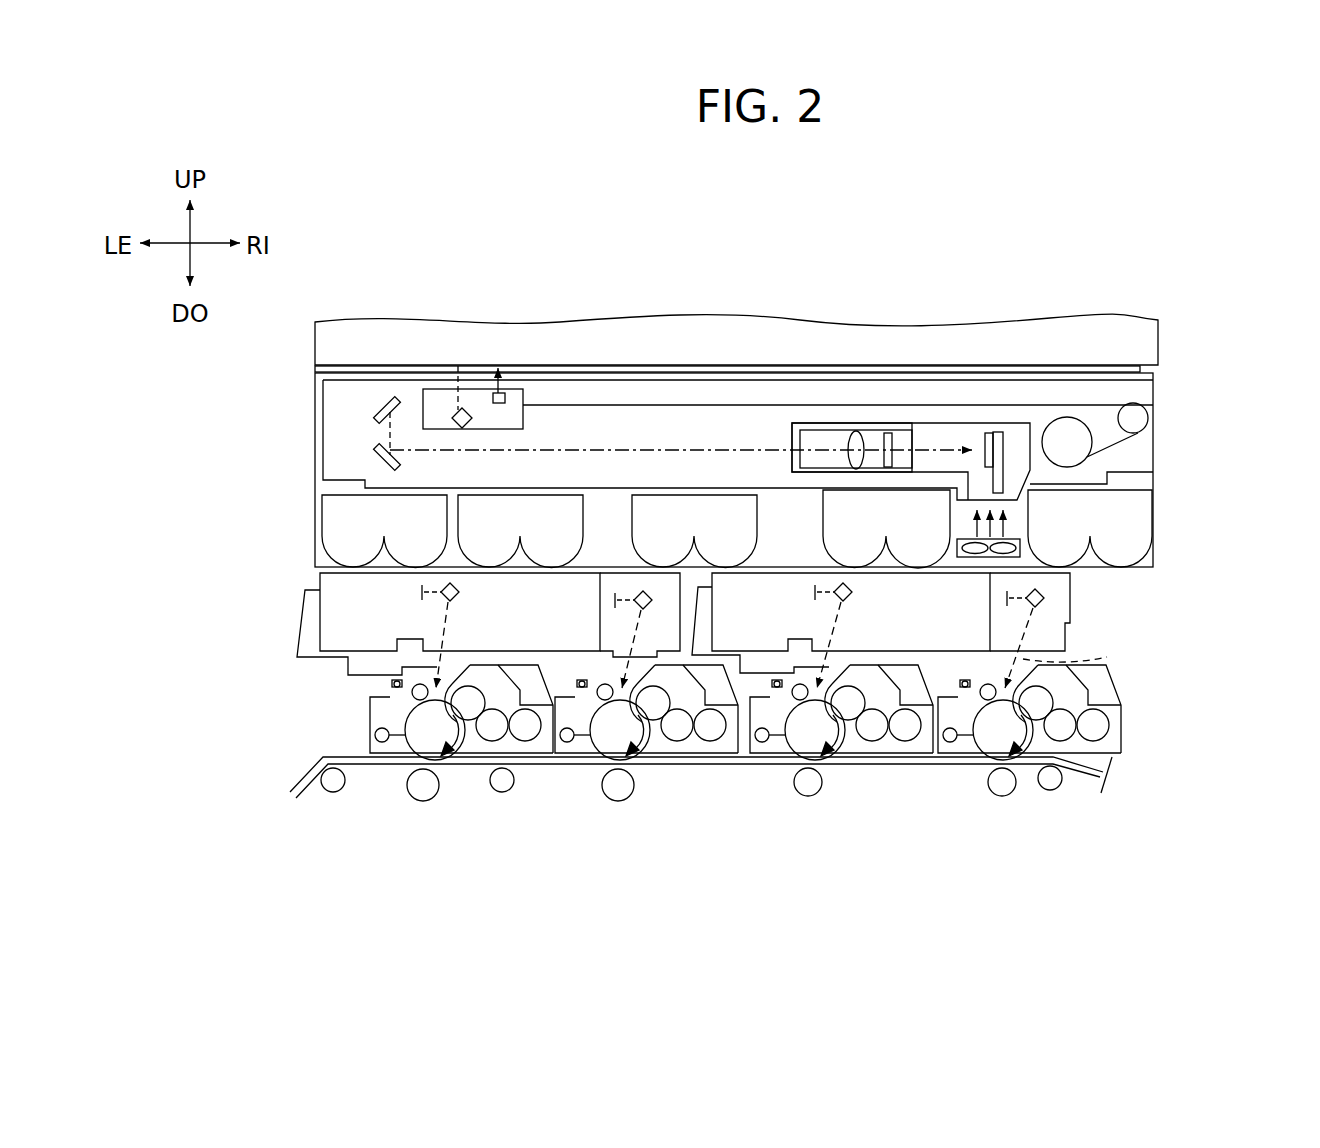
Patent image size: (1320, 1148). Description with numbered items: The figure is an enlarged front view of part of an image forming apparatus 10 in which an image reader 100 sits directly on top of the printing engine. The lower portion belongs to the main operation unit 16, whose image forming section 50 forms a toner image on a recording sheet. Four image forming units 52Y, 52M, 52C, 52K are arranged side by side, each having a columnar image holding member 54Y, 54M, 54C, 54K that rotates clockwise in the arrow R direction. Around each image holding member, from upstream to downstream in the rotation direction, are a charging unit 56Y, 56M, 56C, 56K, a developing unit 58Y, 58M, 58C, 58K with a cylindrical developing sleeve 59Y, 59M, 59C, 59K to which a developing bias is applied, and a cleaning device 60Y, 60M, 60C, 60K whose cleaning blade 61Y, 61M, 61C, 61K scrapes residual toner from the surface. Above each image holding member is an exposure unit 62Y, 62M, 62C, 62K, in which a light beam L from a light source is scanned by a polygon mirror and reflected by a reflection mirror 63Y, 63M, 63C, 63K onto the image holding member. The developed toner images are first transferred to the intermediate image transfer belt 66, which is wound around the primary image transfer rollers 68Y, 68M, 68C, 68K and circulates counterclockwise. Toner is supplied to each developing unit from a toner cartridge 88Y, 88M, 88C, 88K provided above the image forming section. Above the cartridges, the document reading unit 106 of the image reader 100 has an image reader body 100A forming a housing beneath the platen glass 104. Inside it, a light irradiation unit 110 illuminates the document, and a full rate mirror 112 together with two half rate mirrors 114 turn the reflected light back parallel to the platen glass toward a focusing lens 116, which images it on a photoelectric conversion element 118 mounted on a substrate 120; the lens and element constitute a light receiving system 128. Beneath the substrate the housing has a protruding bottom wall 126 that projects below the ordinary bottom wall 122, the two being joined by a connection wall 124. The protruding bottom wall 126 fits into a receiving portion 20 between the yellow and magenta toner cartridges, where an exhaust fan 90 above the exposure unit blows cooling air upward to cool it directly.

The image forming apparatus 10 is at (989, 591).
The main operation unit 16 is at (222, 850).
The receiving portion 20 is at (962, 534).
The image forming section 50 is at (288, 730).
The image forming unit 52K is at (538, 678).
The image forming unit 52C is at (732, 676).
The image forming unit 52M is at (925, 678).
The image forming unit 52Y is at (1128, 716).
The image holding member 54K is at (415, 748).
The image holding member 54C is at (600, 748).
The image holding member 54M is at (795, 748).
The image holding member 54Y is at (985, 748).
The charging unit 56K is at (396, 680).
The charging unit 56C is at (582, 680).
The charging unit 56M is at (777, 680).
The charging unit 56Y is at (966, 680).
The developing unit 58K is at (482, 754).
The developing unit 58C is at (680, 754).
The developing unit 58M is at (878, 754).
The developing unit 58Y is at (1120, 688).
The developing sleeve 59K is at (465, 750).
The developing sleeve 59C is at (652, 750).
The developing sleeve 59M is at (848, 750).
The developing sleeve 59Y is at (1052, 690).
The cleaning device 60K is at (378, 742).
The cleaning device 60C is at (563, 742).
The cleaning device 60M is at (758, 742).
The cleaning device 60Y is at (948, 742).
The cleaning blade 61K is at (392, 750).
The cleaning blade 61C is at (580, 752).
The cleaning blade 61M is at (772, 752).
The cleaning blade 61Y is at (962, 752).
The exposure unit 62K is at (322, 578).
The exposure unit 62C is at (627, 580).
The exposure unit 62M is at (797, 577).
The exposure unit 62Y is at (1070, 612).
The reflection mirror 63K is at (448, 585).
The reflection mirror 63C is at (650, 592).
The reflection mirror 63M is at (852, 592).
The reflection mirror 63Y is at (1044, 598).
The intermediate image transfer belt 66 is at (1098, 786).
The primary image transfer roller 68K is at (428, 800).
The primary image transfer roller 68C is at (620, 800).
The primary image transfer roller 68M is at (810, 797).
The primary image transfer roller 68Y is at (1004, 797).
The toner cartridge 88K is at (345, 512).
The toner cartridge 88C is at (645, 500).
The toner cartridge 88M is at (818, 505).
The toner cartridge 88Y is at (1140, 514).
The exhaust fan 90 is at (967, 566).
The image reader 100 is at (1168, 338).
The image reader body 100A is at (1160, 392).
The platen glass 104 is at (597, 372).
The document reading unit 106 is at (1162, 438).
The light irradiation unit 110 is at (506, 400).
The full rate mirror 112 is at (472, 420).
The half rate mirror 114 is at (375, 405).
The focusing lens 116 is at (857, 430).
The photoelectric conversion element 118 is at (986, 432).
The substrate 120 is at (1000, 430).
The bottom wall 122 is at (390, 492).
The connection wall 124 is at (1033, 498).
The protruding bottom wall 126 is at (957, 510).
The light receiving system 128 is at (916, 421).
The light beam L is at (1065, 644).